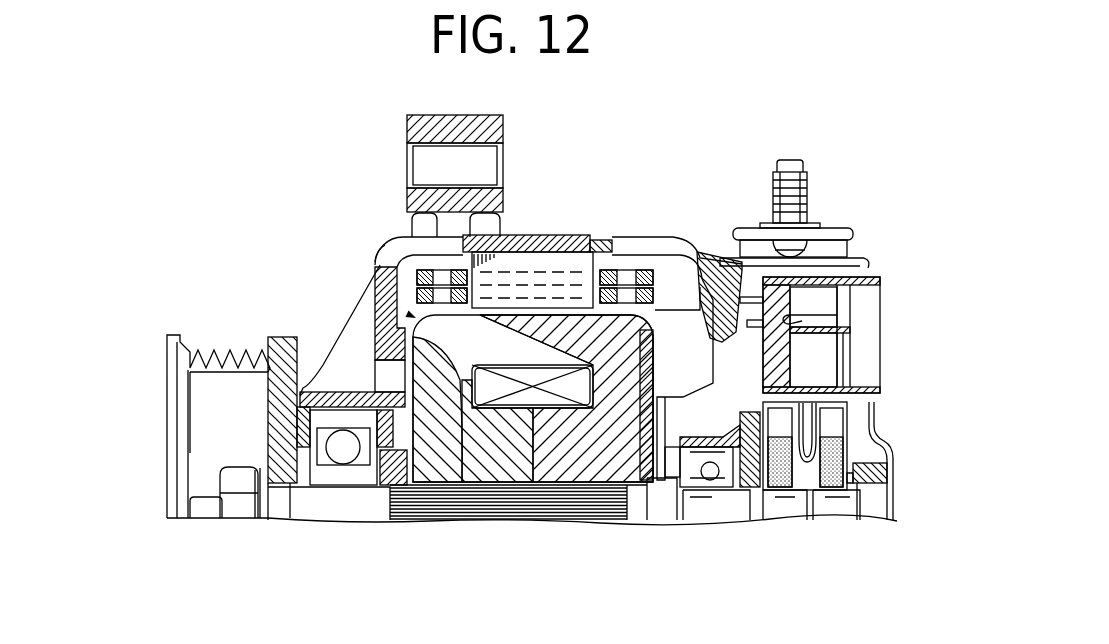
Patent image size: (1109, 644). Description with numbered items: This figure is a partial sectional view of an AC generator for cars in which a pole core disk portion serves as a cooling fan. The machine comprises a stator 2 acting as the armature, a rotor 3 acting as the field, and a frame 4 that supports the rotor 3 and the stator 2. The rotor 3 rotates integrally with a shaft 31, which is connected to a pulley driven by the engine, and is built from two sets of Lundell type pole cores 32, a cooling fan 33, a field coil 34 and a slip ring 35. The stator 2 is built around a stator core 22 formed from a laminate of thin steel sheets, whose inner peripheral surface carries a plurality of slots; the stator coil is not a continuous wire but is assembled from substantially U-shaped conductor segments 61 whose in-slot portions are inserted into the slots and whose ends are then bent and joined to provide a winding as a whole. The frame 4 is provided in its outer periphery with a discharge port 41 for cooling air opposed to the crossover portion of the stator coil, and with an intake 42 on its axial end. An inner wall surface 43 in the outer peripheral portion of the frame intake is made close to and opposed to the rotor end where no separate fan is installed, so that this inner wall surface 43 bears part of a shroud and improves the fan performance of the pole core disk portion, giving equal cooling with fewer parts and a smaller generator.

The stator 2 is at (663, 268).
The rotor 3 is at (407, 314).
The frame 4 is at (540, 237).
The stator core 22 is at (510, 263).
The shaft 31 is at (268, 462).
The Lundell type pole cores 32 is at (563, 438).
The cooling fan 33 is at (690, 368).
The field coil 34 is at (538, 370).
The slip ring 35 is at (392, 385).
The discharge port 41 is at (418, 275).
The intake 42 is at (386, 380).
The inner wall surface 43 is at (462, 487).
The conductor segment 61 is at (377, 262).